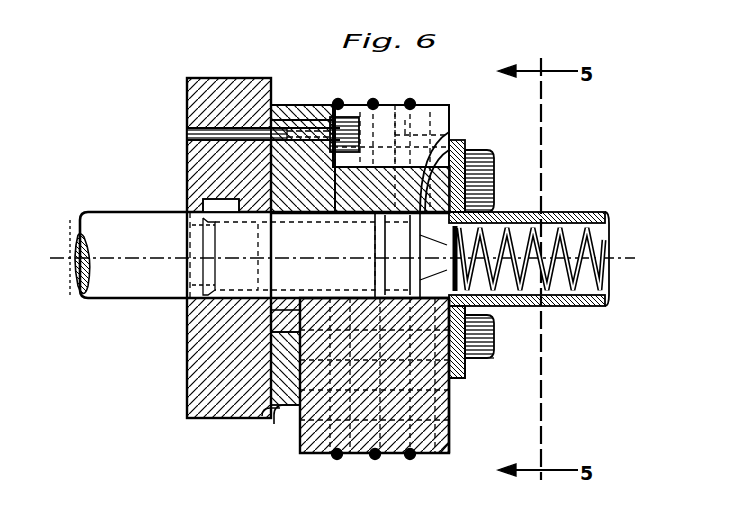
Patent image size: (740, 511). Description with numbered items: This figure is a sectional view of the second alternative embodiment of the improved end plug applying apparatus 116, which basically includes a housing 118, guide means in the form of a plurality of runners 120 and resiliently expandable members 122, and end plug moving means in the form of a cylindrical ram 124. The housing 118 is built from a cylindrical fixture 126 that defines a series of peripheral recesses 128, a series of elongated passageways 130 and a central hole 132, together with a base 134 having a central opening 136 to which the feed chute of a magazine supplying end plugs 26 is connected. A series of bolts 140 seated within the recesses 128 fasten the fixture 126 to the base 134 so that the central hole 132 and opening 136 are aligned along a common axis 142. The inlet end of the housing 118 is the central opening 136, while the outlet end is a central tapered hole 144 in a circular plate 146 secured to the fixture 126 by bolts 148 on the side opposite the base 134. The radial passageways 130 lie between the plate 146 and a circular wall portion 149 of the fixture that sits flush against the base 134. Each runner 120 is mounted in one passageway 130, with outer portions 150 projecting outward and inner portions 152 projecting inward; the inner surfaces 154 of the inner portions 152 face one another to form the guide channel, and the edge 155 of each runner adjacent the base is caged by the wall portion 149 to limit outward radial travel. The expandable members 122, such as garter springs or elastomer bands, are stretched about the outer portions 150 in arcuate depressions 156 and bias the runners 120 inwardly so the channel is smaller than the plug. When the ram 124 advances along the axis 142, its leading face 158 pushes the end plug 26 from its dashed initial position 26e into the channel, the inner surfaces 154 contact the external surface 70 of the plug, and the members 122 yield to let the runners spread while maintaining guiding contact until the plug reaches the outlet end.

The end plug 26 is at (491, 210).
The initial position of end plug 26e is at (192, 210).
The external surface of end plug 70 is at (446, 128).
The end plug applying apparatus 116 is at (452, 73).
The housing 118 is at (264, 71).
The runners 120 is at (420, 124).
The resiliently expandable members 122 is at (340, 100).
The cylindrical ram 124 is at (92, 302).
The cylindrical fixture 126 is at (287, 103).
The peripheral recesses 128 is at (332, 117).
The elongated passageways 130 is at (297, 431).
The central hole 132 is at (462, 157).
The base 134 is at (222, 78).
The central opening 136 is at (186, 300).
The bolts 140 is at (384, 104).
The common axis 142 is at (610, 262).
The central tapered hole 144 is at (466, 322).
The circular plate 146 is at (468, 372).
The bolts 148 is at (494, 152).
The circular wall portion 149 is at (276, 420).
The outer portions of runners 150 is at (449, 455).
The inner portions of runners 152 is at (451, 412).
The inner surfaces 154 is at (451, 390).
The edge of runner 155 is at (222, 340).
The arcuate depressions 156 is at (409, 458).
The leading face of ram 158 is at (365, 268).